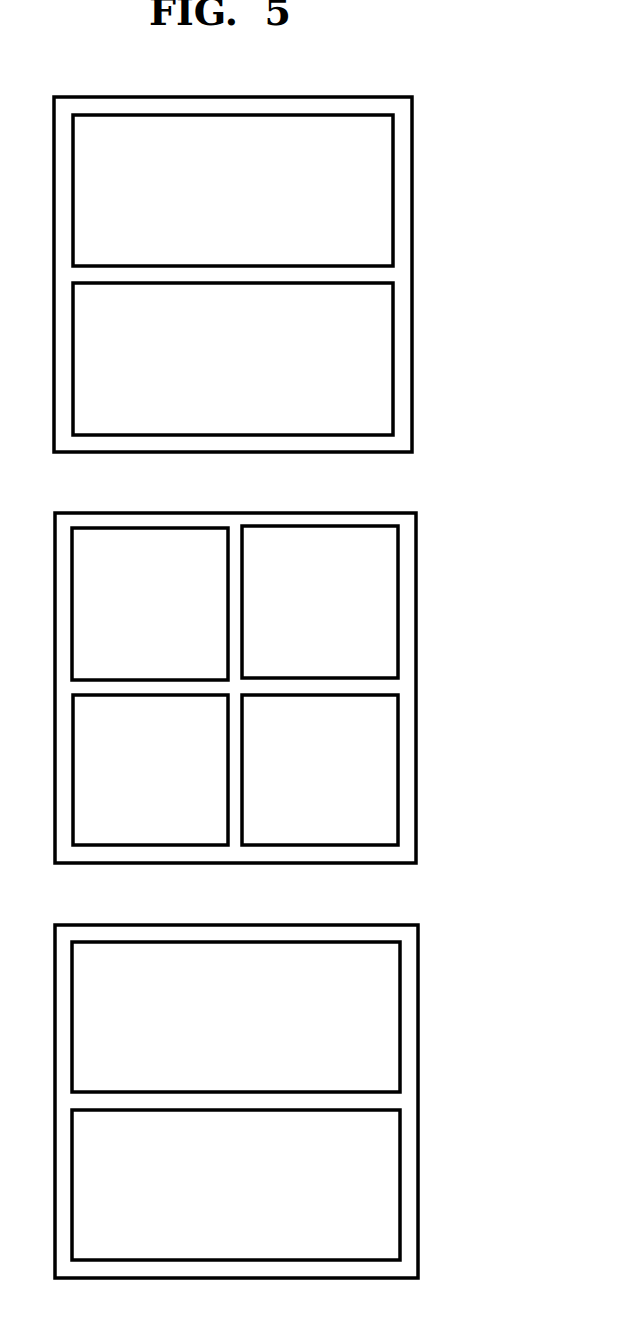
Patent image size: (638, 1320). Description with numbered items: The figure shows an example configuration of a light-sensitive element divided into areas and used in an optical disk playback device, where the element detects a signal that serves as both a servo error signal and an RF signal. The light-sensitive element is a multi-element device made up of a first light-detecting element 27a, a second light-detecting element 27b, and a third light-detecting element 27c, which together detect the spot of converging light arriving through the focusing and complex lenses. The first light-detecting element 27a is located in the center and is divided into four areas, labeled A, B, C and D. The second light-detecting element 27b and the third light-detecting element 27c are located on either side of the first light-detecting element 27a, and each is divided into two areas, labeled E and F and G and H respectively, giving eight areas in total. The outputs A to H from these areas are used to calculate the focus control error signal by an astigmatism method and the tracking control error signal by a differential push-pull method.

The first light-detecting element 27a is at (416, 553).
The second light-detecting element 27b is at (412, 127).
The third light-detecting element 27c is at (418, 950).